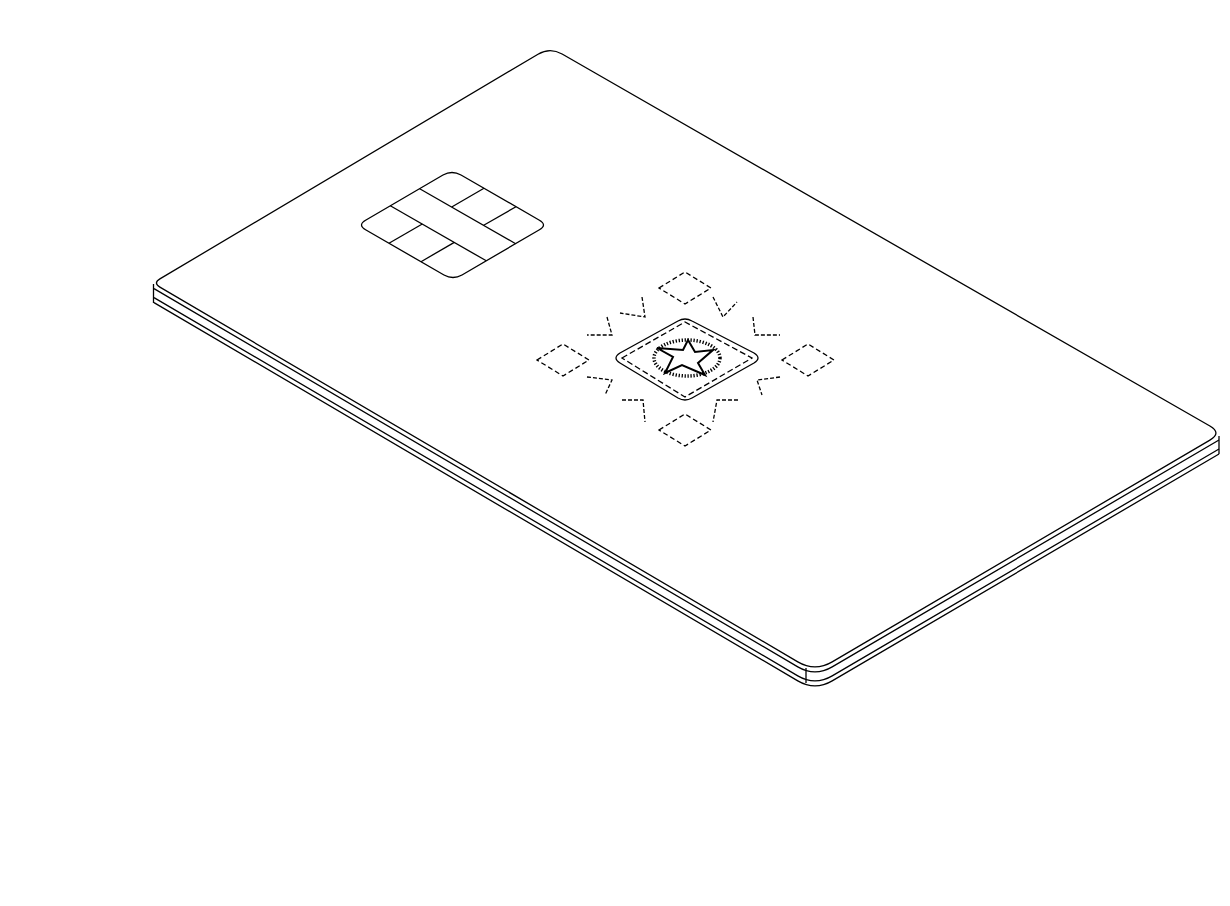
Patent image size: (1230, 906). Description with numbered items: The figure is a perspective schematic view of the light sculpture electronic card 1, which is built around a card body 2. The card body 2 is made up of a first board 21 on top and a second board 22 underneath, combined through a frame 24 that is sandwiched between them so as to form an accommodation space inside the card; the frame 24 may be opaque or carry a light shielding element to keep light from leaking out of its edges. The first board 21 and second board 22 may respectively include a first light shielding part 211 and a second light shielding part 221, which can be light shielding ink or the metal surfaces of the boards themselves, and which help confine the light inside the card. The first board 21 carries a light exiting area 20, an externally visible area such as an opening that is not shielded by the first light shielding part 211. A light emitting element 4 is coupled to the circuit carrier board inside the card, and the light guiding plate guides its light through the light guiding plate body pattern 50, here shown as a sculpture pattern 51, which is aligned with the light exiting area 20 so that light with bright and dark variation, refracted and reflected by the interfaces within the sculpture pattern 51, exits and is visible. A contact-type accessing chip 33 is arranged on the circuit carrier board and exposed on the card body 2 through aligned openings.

The light sculpture electronic card 1 is at (240, 81).
The card body 2 is at (820, 178).
The first board 21 is at (1133, 510).
The first light shielding part 211 is at (973, 308).
The second board 22 is at (225, 344).
The second light shielding part 221 is at (722, 637).
The frame 24 is at (1080, 532).
The contact-type accessing chip 33 is at (418, 205).
The light exiting area 20 is at (657, 327).
The light emitting element 4 is at (562, 391).
The light guiding plate body pattern 50 is at (737, 352).
The sculpture pattern 51 is at (706, 370).